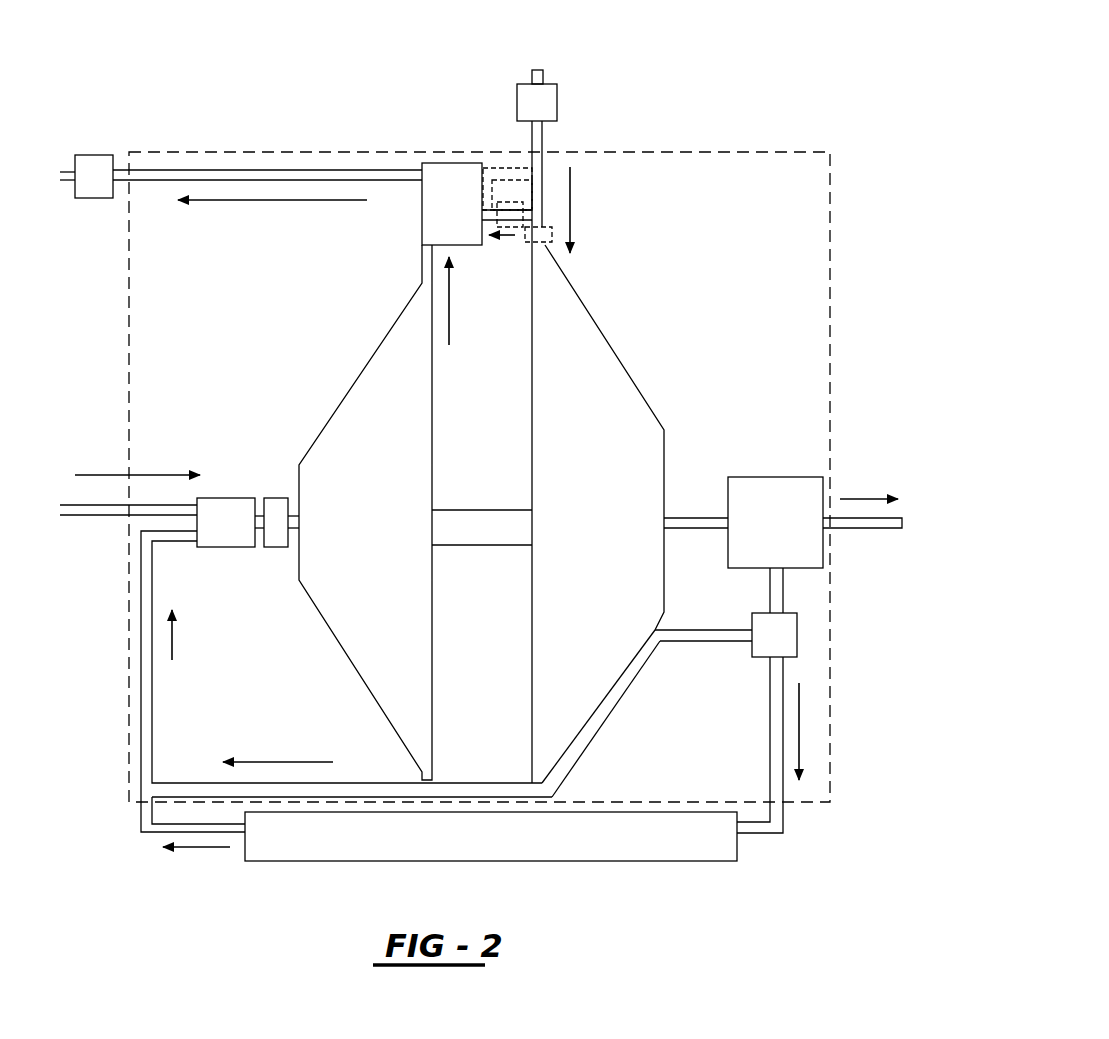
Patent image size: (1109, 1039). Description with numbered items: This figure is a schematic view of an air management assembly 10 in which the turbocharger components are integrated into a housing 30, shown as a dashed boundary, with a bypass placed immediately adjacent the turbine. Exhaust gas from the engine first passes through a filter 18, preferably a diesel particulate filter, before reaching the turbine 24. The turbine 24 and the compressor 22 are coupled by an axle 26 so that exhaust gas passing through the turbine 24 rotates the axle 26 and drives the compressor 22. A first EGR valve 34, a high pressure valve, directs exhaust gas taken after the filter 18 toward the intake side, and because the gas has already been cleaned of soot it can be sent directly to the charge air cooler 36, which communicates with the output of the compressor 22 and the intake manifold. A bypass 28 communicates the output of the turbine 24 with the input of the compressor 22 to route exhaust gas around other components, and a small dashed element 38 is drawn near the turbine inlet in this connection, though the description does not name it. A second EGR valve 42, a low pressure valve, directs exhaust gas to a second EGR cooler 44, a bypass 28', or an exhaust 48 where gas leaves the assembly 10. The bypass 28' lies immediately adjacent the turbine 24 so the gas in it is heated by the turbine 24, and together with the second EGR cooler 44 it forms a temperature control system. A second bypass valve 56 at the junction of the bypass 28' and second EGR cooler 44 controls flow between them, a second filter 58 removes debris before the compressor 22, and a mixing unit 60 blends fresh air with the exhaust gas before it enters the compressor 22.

The air management assembly 10 is at (770, 56).
The filter 18 is at (557, 104).
The compressor 22 is at (387, 332).
The turbine 24 is at (608, 345).
The axle 26 is at (483, 510).
The bypass 28 is at (506, 164).
The bypass 28' is at (647, 713).
The housing 30 is at (778, 152).
The first EGR valve 34 is at (452, 163).
The charge air cooler 36 is at (97, 155).
The valve 38 is at (552, 240).
The second EGR valve 42 is at (780, 477).
The second EGR cooler 44 is at (635, 861).
The exhaust 48 is at (846, 530).
The second bypass valve 56 is at (797, 630).
The second filter 58 is at (273, 547).
The mixing unit 60 is at (240, 547).